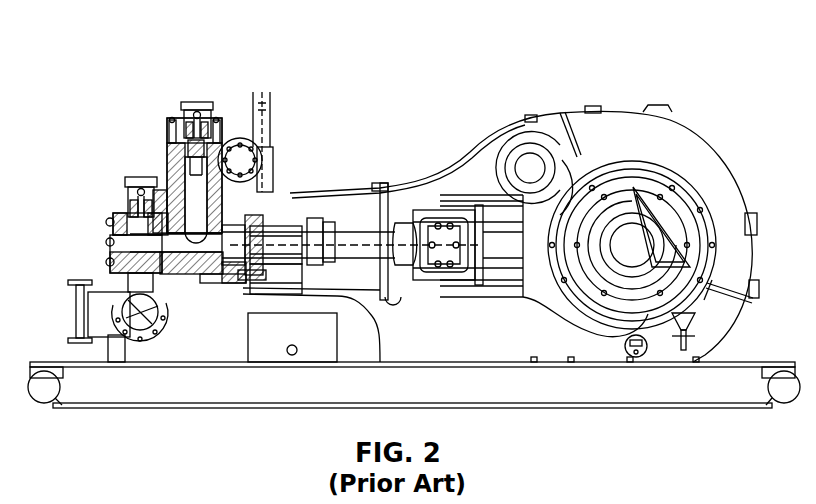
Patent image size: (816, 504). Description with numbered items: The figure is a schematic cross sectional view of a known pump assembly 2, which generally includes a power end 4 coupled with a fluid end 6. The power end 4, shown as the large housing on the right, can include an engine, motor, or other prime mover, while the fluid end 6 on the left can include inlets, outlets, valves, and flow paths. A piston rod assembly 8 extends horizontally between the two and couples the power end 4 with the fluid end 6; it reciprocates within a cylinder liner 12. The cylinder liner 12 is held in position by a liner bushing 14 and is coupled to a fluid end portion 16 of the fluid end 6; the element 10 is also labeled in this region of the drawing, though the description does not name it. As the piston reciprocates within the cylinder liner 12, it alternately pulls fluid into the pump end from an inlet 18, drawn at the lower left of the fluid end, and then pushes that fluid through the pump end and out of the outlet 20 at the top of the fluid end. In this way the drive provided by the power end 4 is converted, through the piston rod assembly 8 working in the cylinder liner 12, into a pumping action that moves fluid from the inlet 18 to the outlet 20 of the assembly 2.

The pump assembly 2 is at (629, 56).
The power end 4 is at (722, 112).
The fluid end 6 is at (95, 128).
The piston rod assembly 8 is at (336, 225).
The stuffing box 10 is at (310, 257).
The cylinder liner 12 is at (283, 262).
The liner bushing 14 is at (232, 290).
The fluid end portion 16 is at (203, 272).
The inlet 18 is at (129, 291).
The outlet 20 is at (197, 103).